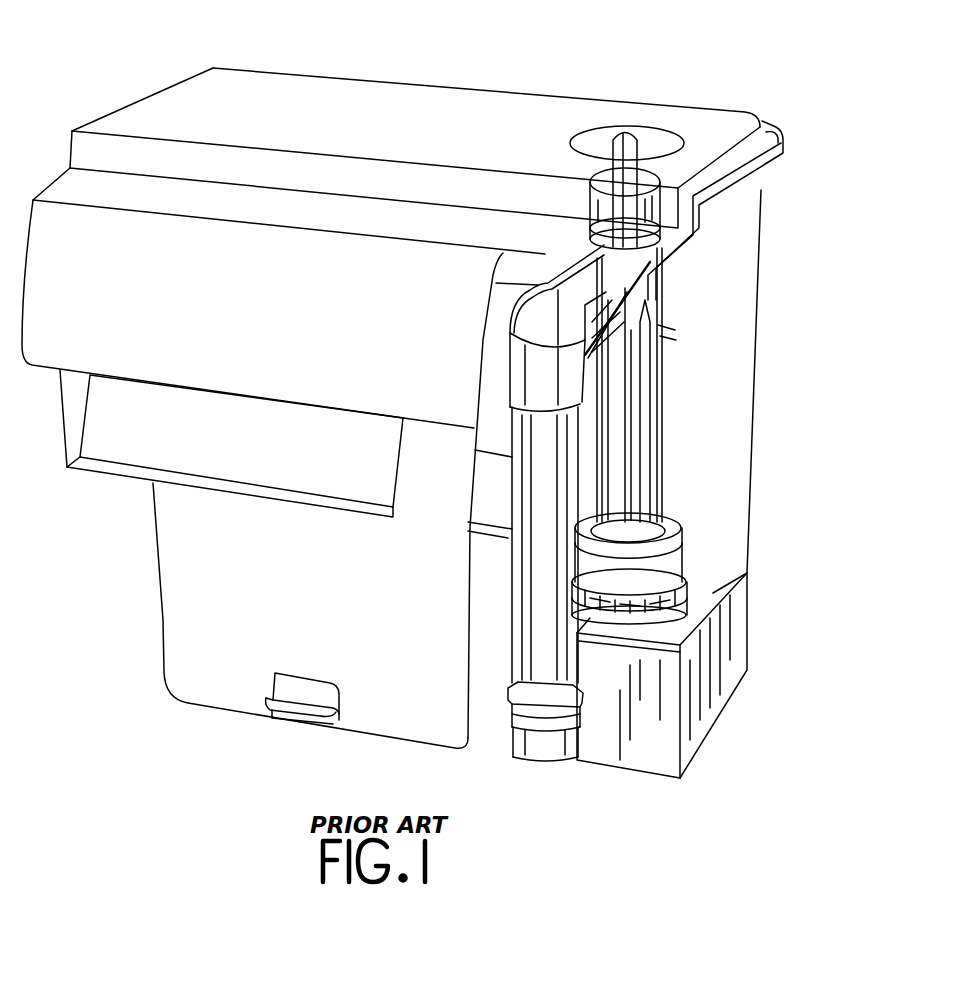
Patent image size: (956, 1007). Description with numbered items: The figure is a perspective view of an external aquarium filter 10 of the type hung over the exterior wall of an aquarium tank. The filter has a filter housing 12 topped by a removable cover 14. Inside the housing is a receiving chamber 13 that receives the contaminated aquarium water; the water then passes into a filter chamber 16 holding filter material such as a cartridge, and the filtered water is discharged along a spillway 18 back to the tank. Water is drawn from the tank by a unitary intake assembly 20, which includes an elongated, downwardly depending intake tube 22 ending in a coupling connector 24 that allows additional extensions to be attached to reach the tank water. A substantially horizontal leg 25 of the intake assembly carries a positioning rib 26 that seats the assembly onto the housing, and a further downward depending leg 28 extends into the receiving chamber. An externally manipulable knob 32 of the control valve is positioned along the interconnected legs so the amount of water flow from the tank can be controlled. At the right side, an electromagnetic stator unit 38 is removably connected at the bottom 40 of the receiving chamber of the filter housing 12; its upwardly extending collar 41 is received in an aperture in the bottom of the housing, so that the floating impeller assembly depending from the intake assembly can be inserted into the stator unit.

The external aquarium filter 10 is at (579, 53).
The filter housing 12 is at (743, 258).
The receiving chamber 13 is at (733, 403).
The removable cover 14 is at (291, 63).
The filter chamber 16 is at (175, 645).
The spillway 18 is at (143, 448).
The unitary intake assembly 20 is at (563, 232).
The intake tube 22 is at (533, 657).
The coupling connector 24 is at (563, 757).
The horizontal leg 25 is at (537, 283).
The positioning rib 26 is at (660, 340).
The downward depending leg 28 is at (655, 475).
The externally manipulable knob 32 is at (637, 127).
The electromagnetic stator unit 38 is at (727, 677).
The bottom of the receiving chamber 40 is at (713, 593).
The collar 41 is at (682, 548).